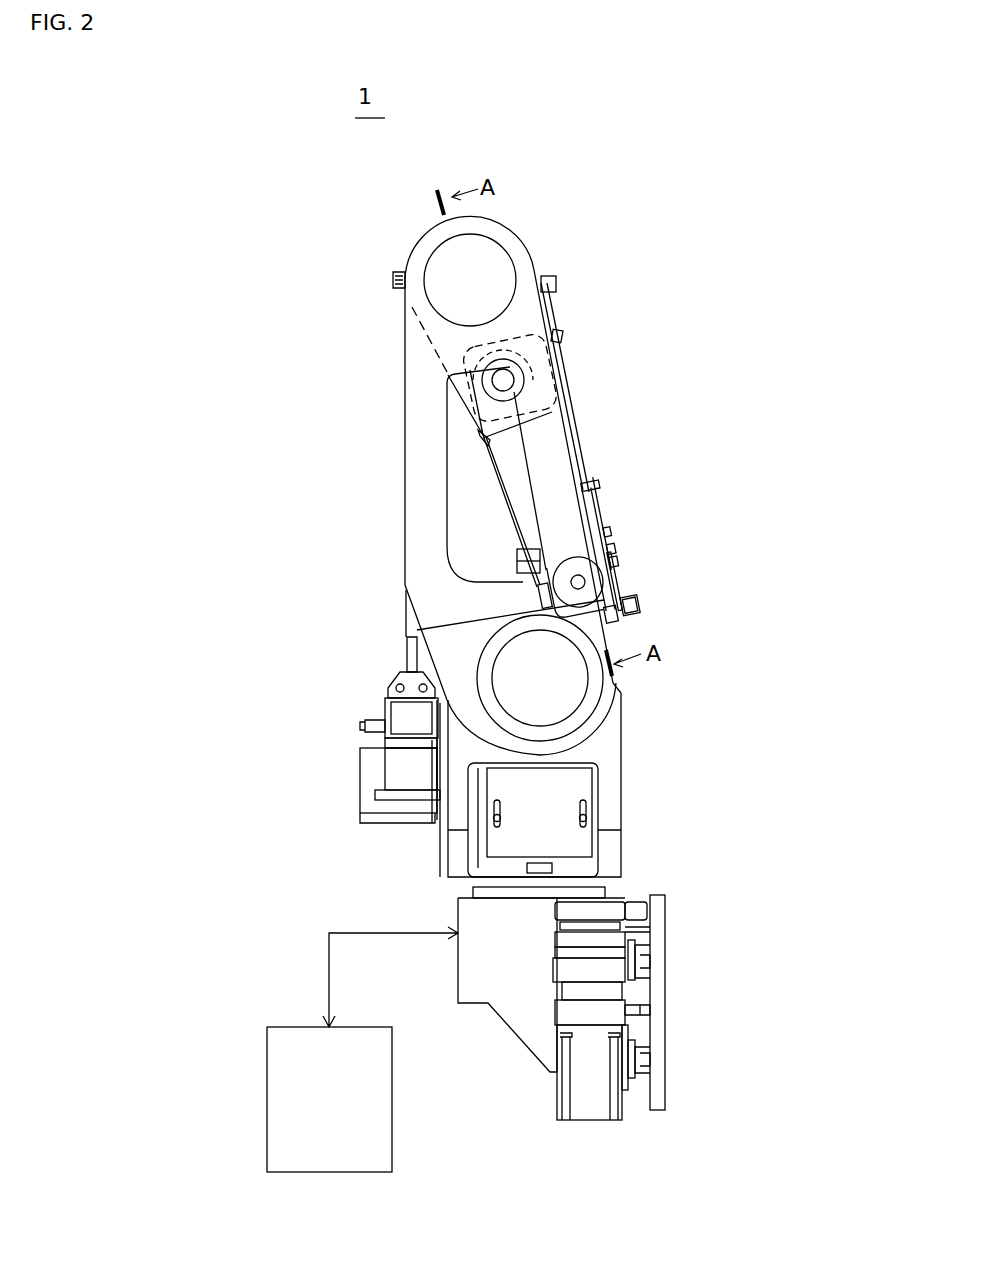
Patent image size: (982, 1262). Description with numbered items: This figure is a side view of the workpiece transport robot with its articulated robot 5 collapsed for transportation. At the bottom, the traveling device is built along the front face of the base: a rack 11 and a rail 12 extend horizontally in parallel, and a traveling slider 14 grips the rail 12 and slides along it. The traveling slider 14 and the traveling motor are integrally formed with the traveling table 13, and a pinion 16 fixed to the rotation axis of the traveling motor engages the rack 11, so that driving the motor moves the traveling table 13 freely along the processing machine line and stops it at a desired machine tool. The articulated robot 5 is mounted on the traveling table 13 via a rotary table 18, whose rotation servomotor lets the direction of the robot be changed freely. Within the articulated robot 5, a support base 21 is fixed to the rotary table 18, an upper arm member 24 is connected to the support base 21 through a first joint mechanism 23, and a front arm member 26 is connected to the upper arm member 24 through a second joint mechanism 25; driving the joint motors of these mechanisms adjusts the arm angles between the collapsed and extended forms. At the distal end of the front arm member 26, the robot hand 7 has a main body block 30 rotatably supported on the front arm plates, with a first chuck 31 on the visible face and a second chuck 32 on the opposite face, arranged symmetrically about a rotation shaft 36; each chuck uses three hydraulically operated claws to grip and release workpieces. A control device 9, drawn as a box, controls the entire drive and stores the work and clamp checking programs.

The articulated robot 5 is at (394, 413).
The robot hand 7 is at (641, 588).
The control device 9 is at (285, 1080).
The rack 11 is at (650, 905).
The rail 12 is at (652, 963).
The traveling table 13 is at (502, 983).
The traveling slider 14 is at (640, 982).
The pinion 16 is at (612, 912).
The rotary table 18 is at (490, 898).
The support base 21 is at (610, 753).
The first joint mechanism 23 is at (488, 648).
The upper arm member 24 is at (410, 516).
The second joint mechanism 25 is at (490, 262).
The front arm member 26 is at (550, 332).
The main body block 30 is at (603, 535).
The first chuck 31 is at (596, 508).
The second chuck 32 is at (527, 588).
The rotation shaft 36 is at (624, 562).